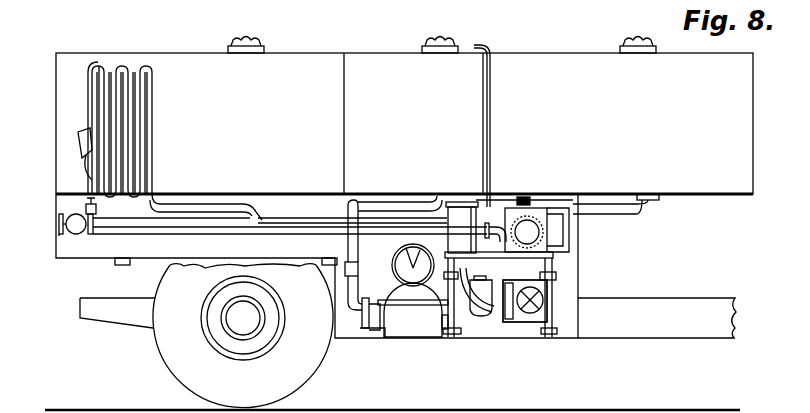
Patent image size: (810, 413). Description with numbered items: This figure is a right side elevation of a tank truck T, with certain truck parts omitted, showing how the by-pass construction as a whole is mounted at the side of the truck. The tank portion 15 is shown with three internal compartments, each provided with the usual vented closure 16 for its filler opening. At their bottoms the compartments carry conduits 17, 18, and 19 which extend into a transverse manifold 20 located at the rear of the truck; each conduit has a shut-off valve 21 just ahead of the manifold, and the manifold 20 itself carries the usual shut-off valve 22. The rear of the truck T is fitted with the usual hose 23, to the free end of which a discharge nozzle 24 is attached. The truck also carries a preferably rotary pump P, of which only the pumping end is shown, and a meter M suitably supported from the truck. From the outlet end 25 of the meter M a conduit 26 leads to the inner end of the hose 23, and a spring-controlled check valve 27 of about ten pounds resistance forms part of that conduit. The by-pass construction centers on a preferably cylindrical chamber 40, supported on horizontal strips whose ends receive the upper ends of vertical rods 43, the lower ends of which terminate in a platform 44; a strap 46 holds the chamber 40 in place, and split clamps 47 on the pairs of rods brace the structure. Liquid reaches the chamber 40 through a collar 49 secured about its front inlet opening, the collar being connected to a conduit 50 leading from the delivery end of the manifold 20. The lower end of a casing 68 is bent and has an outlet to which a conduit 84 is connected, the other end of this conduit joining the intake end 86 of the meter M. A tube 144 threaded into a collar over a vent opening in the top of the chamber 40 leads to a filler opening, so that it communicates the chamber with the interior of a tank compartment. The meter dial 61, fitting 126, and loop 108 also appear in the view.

The tank portion 15 is at (372, 45).
The vented closure 16 is at (252, 44).
The conduit 17 is at (625, 214).
The conduit 18 is at (388, 210).
The conduit 19 is at (198, 216).
The transverse manifold 20 is at (70, 215).
The shut-off valve 21 is at (89, 205).
The shut-off valve 22 is at (58, 236).
The hose 23 is at (102, 72).
The discharge nozzle 24 is at (82, 145).
The outlet end 25 is at (370, 330).
The conduit 26 is at (168, 205).
The check valve 27 is at (359, 270).
The chamber 40 is at (457, 205).
The vertical rods 43 is at (545, 302).
The platform 44 is at (528, 322).
The strap 46 is at (466, 206).
The split clamp 47 is at (556, 276).
The collar 49 is at (500, 226).
The conduit 50 is at (112, 224).
The meter 61 is at (499, 233).
The casing 68 is at (490, 320).
The conduit 84 is at (470, 322).
The intake end 86 is at (445, 328).
The by-pass pipe 108 is at (571, 242).
The fitting 126 is at (523, 196).
The tube 144 is at (490, 120).
The meter M is at (414, 318).
The rotary pump P is at (533, 322).
The tank truck T is at (655, 338).